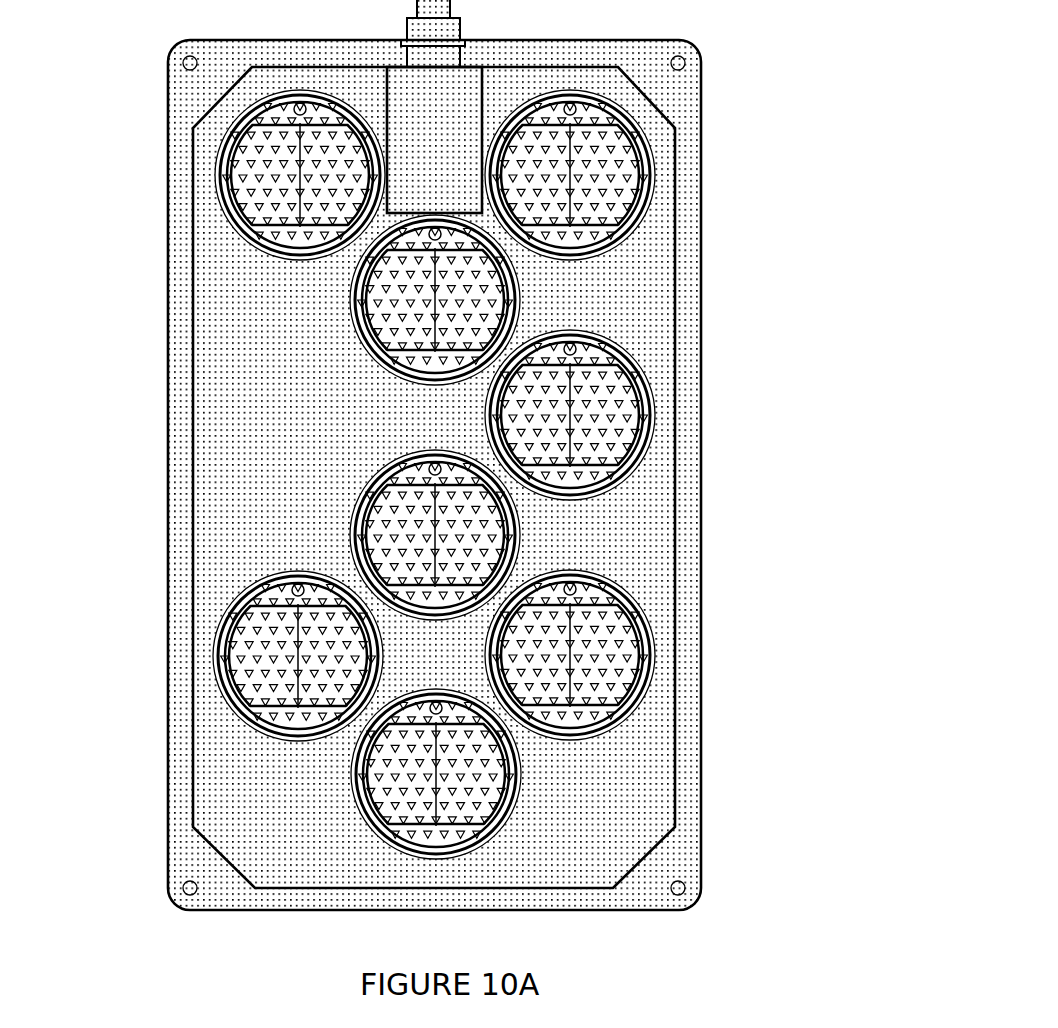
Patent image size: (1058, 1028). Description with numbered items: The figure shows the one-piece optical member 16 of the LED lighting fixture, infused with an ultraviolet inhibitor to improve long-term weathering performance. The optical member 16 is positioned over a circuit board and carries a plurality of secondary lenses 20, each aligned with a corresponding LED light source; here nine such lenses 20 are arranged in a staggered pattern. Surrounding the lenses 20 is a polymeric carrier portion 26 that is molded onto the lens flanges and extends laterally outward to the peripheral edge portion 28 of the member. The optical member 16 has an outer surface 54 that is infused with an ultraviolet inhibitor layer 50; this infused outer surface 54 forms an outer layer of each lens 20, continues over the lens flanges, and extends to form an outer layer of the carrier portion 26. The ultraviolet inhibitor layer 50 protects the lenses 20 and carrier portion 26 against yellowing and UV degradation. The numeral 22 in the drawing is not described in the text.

The one-piece optical member 16 is at (135, 55).
The secondary lens 20 is at (655, 408).
The LED light source 22 is at (655, 408).
The polymeric carrier portion 26 is at (215, 238).
The peripheral edge portion 28 is at (460, 862).
The ultraviolet inhibitor layer 50 is at (600, 117).
The outer surface 54 is at (655, 247).